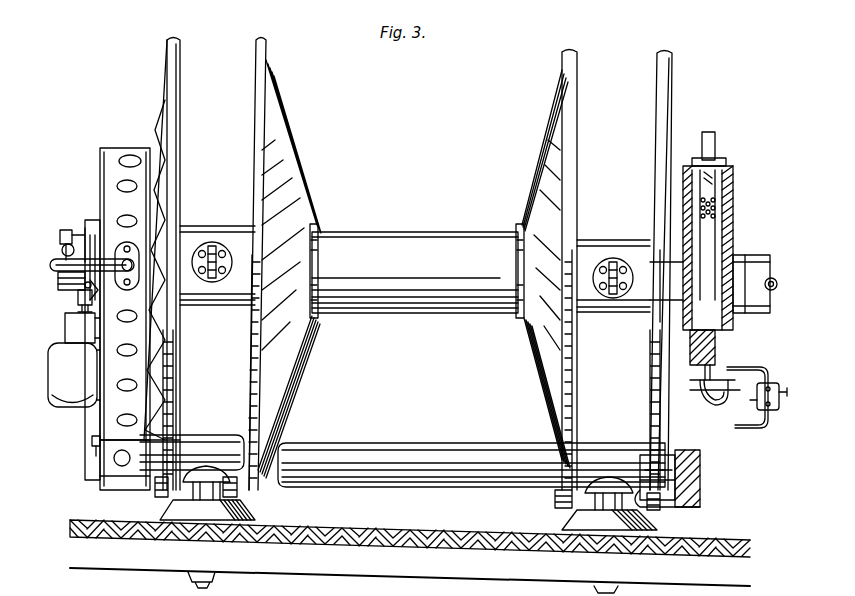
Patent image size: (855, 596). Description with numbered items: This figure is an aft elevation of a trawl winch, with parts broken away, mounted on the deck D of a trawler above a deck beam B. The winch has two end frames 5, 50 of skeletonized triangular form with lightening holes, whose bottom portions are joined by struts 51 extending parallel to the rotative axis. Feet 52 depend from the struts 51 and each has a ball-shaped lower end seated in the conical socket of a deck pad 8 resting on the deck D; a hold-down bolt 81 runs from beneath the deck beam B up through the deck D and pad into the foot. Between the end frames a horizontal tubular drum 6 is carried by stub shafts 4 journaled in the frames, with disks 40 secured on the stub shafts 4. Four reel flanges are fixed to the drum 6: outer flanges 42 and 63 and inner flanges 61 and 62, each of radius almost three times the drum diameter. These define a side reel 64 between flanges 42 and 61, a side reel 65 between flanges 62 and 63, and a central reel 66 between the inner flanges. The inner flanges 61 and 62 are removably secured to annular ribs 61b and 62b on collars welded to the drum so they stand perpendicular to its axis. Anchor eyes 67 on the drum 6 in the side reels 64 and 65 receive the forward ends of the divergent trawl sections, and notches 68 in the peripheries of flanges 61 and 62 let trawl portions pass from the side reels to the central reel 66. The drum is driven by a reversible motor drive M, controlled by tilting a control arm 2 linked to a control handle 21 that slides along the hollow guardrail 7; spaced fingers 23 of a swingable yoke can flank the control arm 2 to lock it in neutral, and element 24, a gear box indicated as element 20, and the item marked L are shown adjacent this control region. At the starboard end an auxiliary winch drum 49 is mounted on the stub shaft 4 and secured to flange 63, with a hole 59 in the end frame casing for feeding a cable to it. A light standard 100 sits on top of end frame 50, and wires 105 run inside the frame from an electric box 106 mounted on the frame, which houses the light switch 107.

The control arm 2 is at (78, 298).
The stub shaft 4 is at (718, 276).
The end frame 5 is at (92, 441).
The drum 6 is at (420, 242).
The guardrail 7 is at (62, 261).
The deck pad 8 is at (243, 512).
The gear box 20 is at (66, 330).
The control handle 21 is at (70, 232).
The spaced fingers 23 is at (58, 286).
The pivot 24 is at (98, 290).
The disk 40 is at (655, 242).
The outer reel flange 42 is at (176, 124).
The auxiliary winch drum 49 is at (712, 346).
The end frame 50 is at (734, 190).
The strut 51 is at (443, 448).
The foot 52 is at (188, 488).
The hole 59 is at (98, 470).
The inner reel flange 61 is at (263, 128).
The annular rib 61b is at (316, 230).
The inner reel flange 62 is at (570, 146).
The annular rib 62b is at (518, 232).
The outer reel flange 63 is at (656, 140).
The side reel 64 is at (233, 58).
The side reel 65 is at (620, 76).
The central reel 66 is at (422, 120).
The anchor eye 67 is at (215, 282).
The notch 68 is at (282, 95).
The hold-down bolt 81 is at (196, 586).
The standard 100 is at (718, 140).
The wires 105 is at (672, 407).
The electric box 106 is at (758, 428).
The light switch 107 is at (776, 388).
The deck beam B is at (447, 576).
The deck D is at (410, 528).
The lubricant L is at (727, 207).
The motor drive M is at (62, 373).